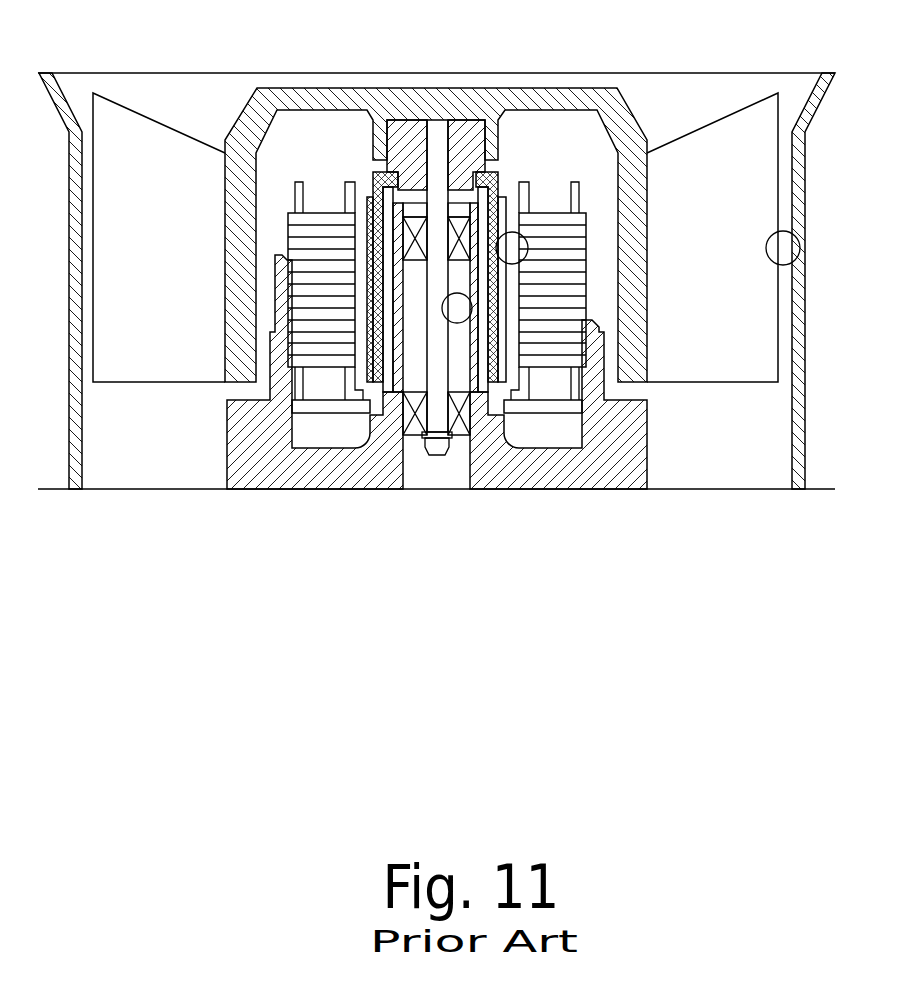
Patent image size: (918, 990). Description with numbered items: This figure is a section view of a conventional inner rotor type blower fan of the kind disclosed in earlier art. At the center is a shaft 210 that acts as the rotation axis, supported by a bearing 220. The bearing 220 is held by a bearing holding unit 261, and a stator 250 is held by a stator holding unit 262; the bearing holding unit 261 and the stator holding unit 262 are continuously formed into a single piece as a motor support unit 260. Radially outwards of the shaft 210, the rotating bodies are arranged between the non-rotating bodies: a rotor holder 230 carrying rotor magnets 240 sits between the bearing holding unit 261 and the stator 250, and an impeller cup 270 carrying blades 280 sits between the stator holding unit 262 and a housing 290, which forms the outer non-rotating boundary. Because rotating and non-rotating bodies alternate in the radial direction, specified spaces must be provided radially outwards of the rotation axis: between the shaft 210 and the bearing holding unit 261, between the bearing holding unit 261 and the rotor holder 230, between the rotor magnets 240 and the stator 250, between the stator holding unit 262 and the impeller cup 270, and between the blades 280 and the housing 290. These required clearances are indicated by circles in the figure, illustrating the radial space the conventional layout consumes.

The shaft 210 is at (437, 133).
The bearing 220 is at (460, 222).
The rotor holder 230 is at (498, 178).
The rotor magnets 240 is at (503, 203).
The stator 250 is at (578, 232).
The motor support unit 260 is at (331, 475).
The bearing holding unit 261 is at (405, 357).
The stator holding unit 262 is at (590, 323).
The impeller cup 270 is at (295, 100).
The blades 280 is at (152, 117).
The housing 290 is at (68, 90).